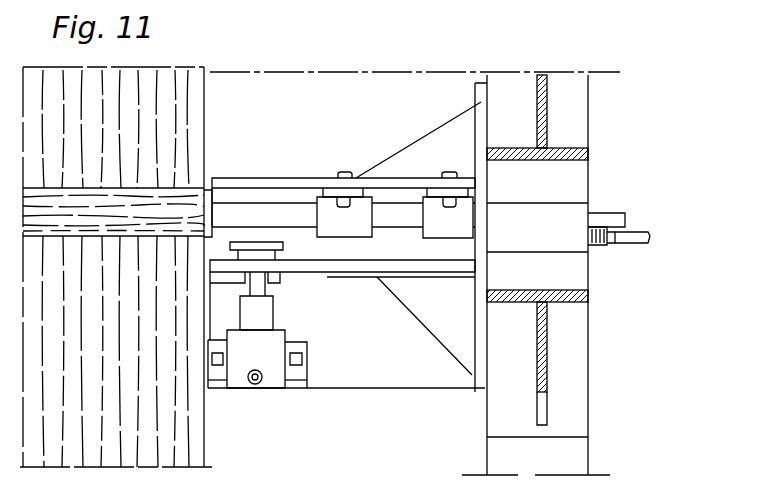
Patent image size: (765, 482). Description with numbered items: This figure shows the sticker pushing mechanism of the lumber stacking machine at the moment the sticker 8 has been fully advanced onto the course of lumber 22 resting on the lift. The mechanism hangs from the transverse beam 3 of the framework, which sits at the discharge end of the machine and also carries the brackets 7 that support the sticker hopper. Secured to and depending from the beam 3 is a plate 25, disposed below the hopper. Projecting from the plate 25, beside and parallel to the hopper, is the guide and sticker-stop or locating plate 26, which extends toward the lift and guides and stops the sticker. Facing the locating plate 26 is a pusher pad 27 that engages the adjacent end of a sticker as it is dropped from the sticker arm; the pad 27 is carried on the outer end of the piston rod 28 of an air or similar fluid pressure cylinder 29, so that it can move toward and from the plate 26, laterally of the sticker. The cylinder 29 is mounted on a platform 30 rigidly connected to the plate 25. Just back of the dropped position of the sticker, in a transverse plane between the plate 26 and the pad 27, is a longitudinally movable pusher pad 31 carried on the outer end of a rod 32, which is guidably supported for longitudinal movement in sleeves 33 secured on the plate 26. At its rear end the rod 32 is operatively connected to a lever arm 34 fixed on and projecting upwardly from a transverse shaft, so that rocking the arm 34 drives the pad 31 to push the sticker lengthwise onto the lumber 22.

The transverse beam 3 is at (500, 453).
The bracket 7 is at (590, 150).
The sticker 8 is at (163, 195).
The lumber 22 is at (170, 429).
The plate 25 is at (483, 112).
The guide and sticker-stop or locating plate 26 is at (357, 178).
The pusher pad 27 is at (263, 249).
The piston rod 28 is at (253, 283).
The fluid pressure cylinder 29 is at (271, 372).
The platform 30 is at (362, 380).
The longitudinally movable pusher pad 31 is at (212, 200).
The rod 32 is at (278, 215).
The sleeves 33 is at (423, 230).
The lever arm 34 is at (624, 246).